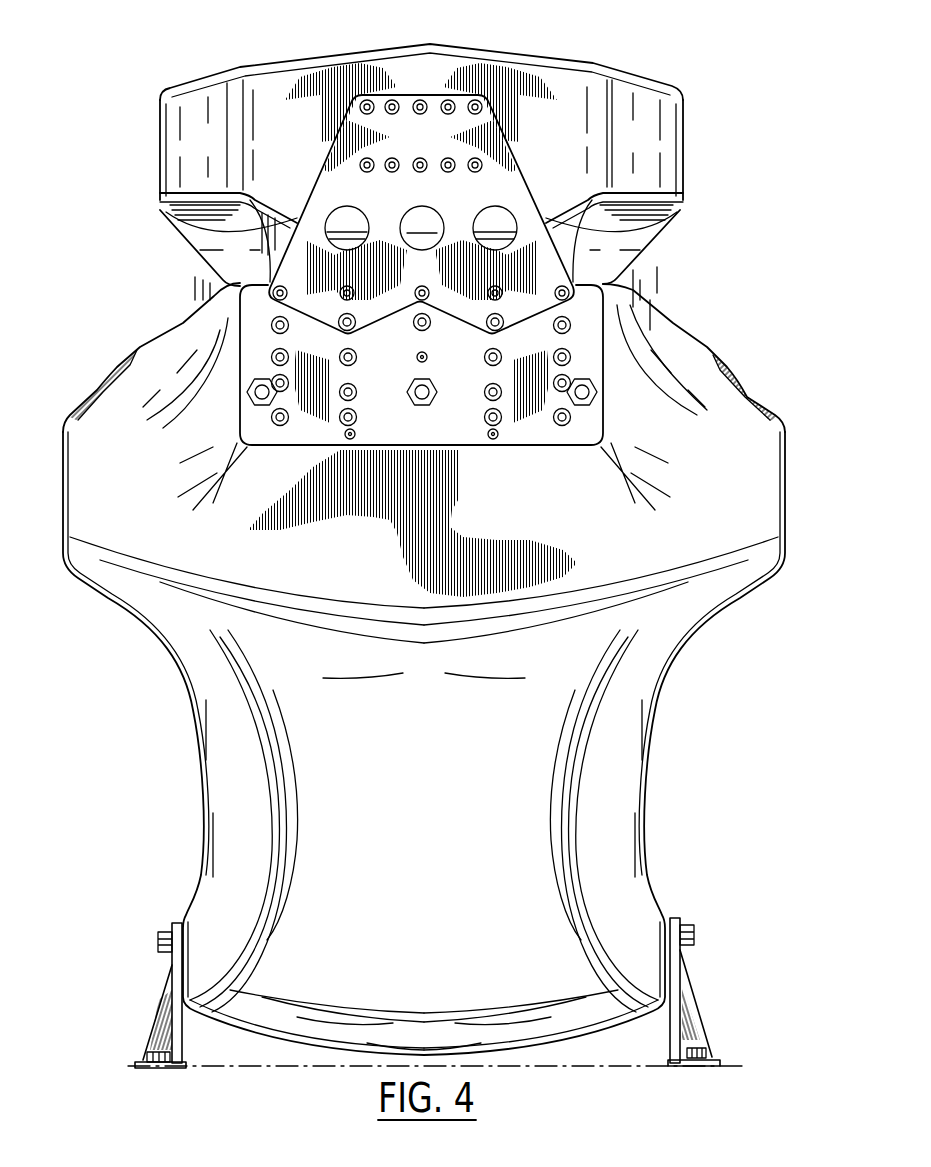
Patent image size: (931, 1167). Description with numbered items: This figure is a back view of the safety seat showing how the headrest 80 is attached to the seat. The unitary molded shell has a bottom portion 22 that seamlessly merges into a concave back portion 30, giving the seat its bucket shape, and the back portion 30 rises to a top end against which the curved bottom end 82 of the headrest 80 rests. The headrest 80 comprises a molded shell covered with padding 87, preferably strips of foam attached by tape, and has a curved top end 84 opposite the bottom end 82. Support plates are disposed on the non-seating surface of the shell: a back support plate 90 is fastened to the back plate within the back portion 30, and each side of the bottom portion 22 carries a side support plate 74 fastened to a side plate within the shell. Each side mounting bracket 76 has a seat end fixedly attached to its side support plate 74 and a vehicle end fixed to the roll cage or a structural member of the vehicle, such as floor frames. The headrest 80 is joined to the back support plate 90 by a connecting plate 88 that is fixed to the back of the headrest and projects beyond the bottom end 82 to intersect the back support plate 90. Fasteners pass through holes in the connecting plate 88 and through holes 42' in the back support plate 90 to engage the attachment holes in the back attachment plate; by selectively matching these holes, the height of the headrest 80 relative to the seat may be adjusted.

The bottom portion 22 is at (625, 1020).
The back portion 30 is at (438, 796).
The holes 42' is at (637, 304).
The side support plate 74 is at (185, 912).
The side mounting bracket 76 is at (688, 1003).
The headrest 80 is at (588, 57).
The bottom end 82 is at (250, 228).
The top end 84 is at (403, 44).
The padding 87 is at (623, 233).
The connecting plate 88 is at (434, 151).
The back support plate 90 is at (435, 436).